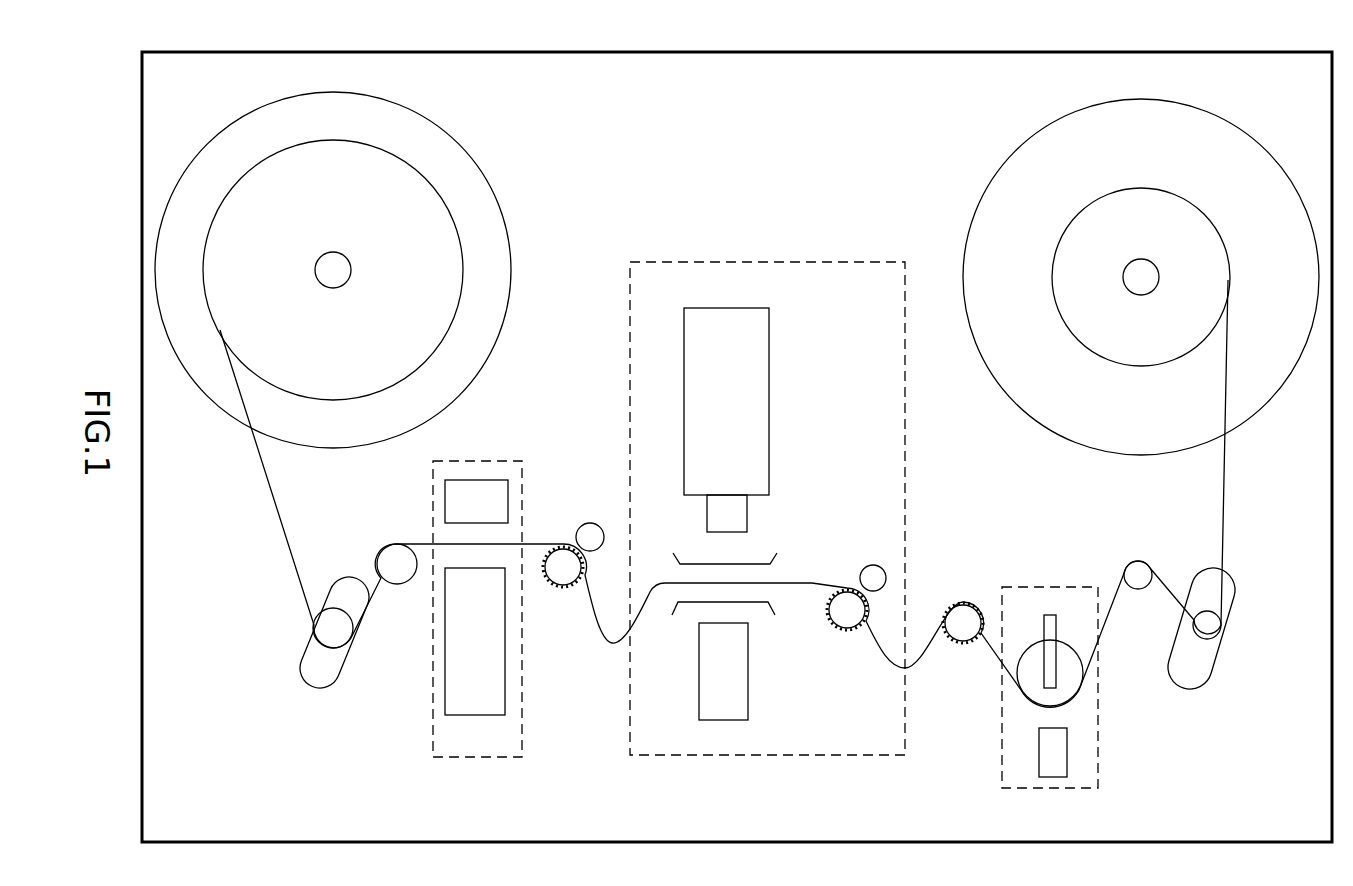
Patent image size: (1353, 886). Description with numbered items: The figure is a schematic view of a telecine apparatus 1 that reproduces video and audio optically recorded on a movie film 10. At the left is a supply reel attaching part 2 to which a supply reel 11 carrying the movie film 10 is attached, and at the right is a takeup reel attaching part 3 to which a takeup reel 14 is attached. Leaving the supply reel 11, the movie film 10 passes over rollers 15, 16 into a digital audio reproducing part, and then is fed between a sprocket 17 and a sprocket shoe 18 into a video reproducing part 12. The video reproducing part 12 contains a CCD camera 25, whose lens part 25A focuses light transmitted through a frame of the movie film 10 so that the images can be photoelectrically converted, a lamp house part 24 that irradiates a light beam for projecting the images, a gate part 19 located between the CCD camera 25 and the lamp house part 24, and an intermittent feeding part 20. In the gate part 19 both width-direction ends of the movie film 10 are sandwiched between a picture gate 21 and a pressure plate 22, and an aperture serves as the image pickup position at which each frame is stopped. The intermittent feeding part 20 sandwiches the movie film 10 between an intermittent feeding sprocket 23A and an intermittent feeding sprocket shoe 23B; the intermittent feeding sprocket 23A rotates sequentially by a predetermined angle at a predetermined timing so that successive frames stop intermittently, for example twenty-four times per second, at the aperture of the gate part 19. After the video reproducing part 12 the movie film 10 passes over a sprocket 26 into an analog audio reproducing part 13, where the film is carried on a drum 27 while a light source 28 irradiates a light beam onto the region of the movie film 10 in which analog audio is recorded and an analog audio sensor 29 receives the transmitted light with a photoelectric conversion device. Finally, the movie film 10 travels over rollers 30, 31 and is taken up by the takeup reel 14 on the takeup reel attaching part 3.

The printer 1 is at (848, 52).
The supply reel attaching part 2 is at (522, 212).
The takeup reel attaching part 3 is at (1002, 158).
The movie film 10 is at (268, 506).
The supply reel 11 is at (196, 156).
The video reproducing part 12 is at (650, 262).
The analog audio reproducing part 13 is at (1098, 738).
The takeup reel 14 is at (1297, 182).
The roller 15 is at (352, 650).
The roller 16 is at (391, 540).
The sprocket 17 is at (562, 588).
The sprocket shoe 18 is at (592, 522).
The gate part 19 is at (788, 537).
The intermittent feeding part 20 is at (839, 659).
The picture gate 21 is at (775, 612).
The pressure plate 22 is at (770, 564).
The intermittent feeding sprocket 23A is at (830, 628).
The intermittent feeding sprocket shoe 23B is at (878, 583).
The lamp house part 24 is at (699, 692).
The CCD camera 25 is at (769, 376).
The lens part 25A is at (707, 526).
The sprocket 26 is at (970, 636).
The drum 27 is at (1033, 637).
The light source 28 is at (1053, 615).
The analog audio sensor 29 is at (1039, 750).
The roller 30 is at (1140, 590).
The roller 31 is at (1207, 638).